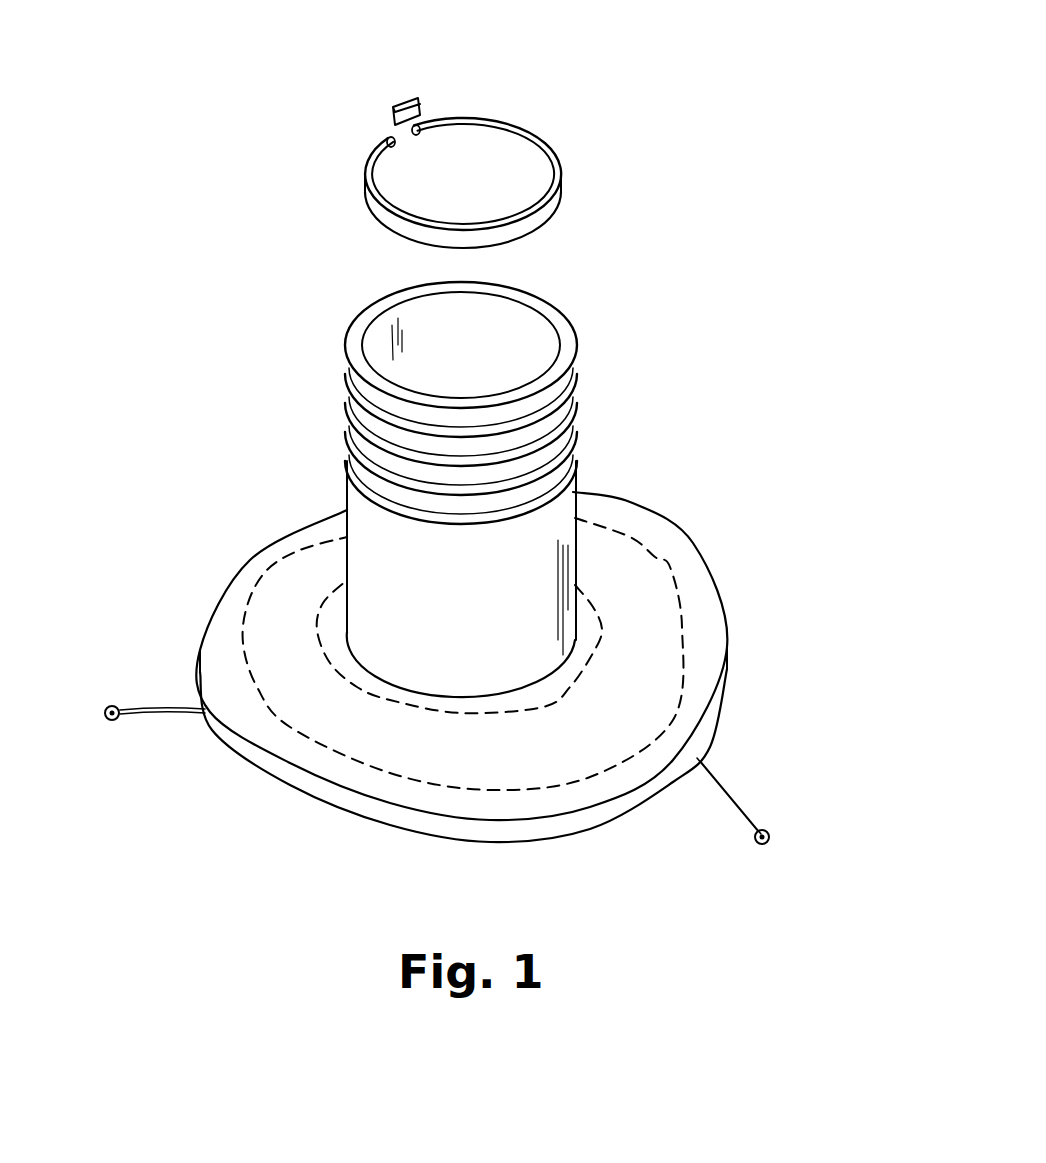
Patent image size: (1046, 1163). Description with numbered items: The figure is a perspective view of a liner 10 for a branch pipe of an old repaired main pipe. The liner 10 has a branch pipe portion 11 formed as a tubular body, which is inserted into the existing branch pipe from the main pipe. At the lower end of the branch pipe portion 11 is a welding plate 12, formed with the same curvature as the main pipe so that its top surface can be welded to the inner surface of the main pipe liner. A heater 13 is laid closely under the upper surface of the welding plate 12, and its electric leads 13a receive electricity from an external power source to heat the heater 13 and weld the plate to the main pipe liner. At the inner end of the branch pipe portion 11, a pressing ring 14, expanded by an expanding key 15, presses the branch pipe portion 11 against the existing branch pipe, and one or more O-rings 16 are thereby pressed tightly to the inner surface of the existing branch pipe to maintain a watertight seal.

The liner 10 is at (717, 95).
The branch pipe portion 11 is at (553, 305).
The welding plate 12 is at (708, 610).
The heater 13 is at (643, 563).
The electric leads 13a is at (108, 704).
The pressing ring 14 is at (498, 118).
The expanding key 15 is at (405, 97).
The O-rings 16 is at (583, 370).